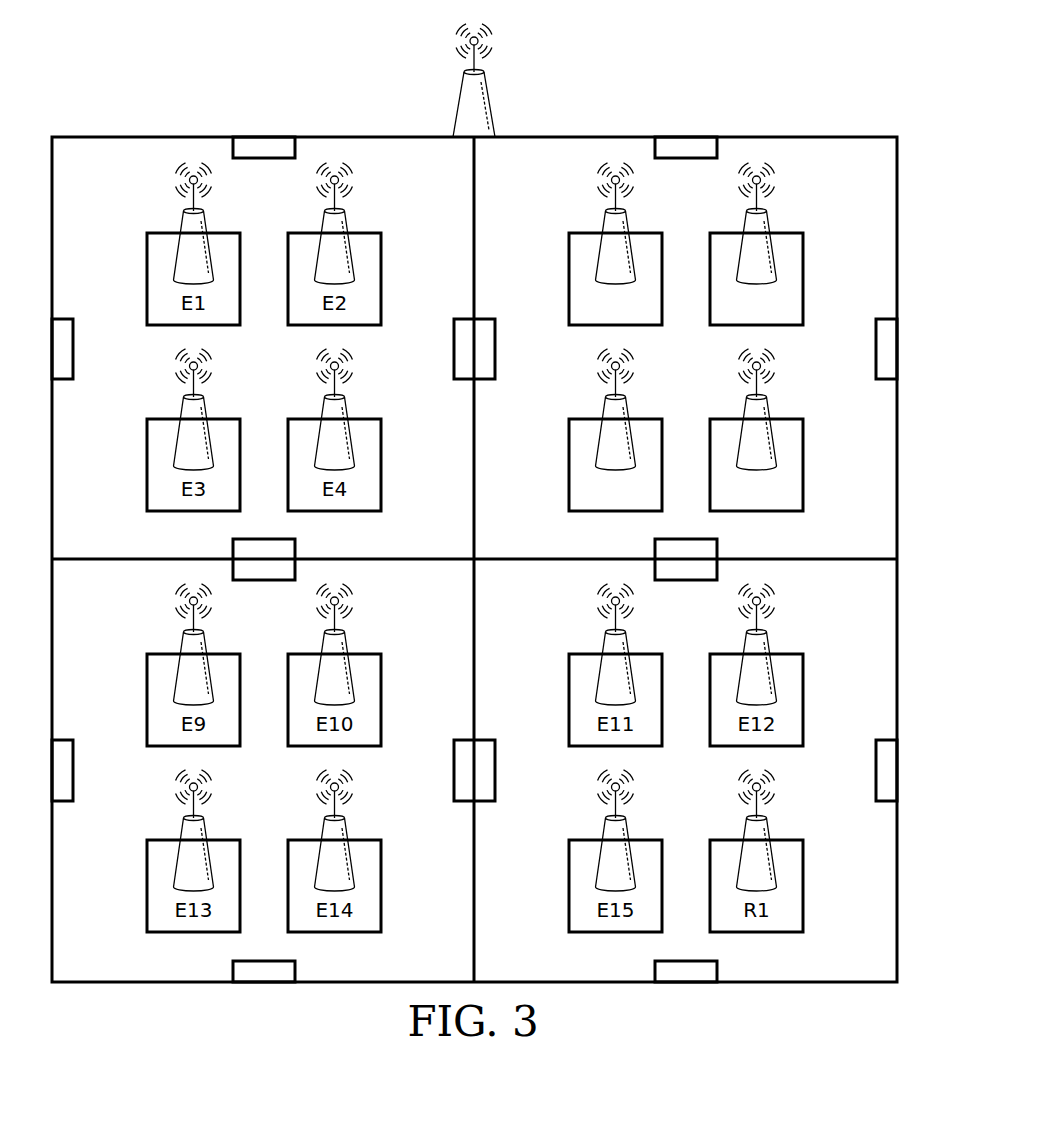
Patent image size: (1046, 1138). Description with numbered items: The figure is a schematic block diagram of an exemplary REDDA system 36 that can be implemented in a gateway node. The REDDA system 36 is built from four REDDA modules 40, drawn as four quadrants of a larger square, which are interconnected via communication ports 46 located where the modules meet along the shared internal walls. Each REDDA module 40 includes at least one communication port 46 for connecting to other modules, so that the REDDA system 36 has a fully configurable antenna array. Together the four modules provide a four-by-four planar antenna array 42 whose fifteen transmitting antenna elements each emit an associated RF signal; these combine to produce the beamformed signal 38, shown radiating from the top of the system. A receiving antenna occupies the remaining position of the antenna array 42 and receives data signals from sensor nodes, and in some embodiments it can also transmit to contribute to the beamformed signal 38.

The REDDA system 36 is at (843, 110).
The beamformed signal 38 is at (437, 91).
The REDDA module 40 is at (192, 135).
The antenna array 42 is at (848, 308).
The communication port 46 is at (463, 335).